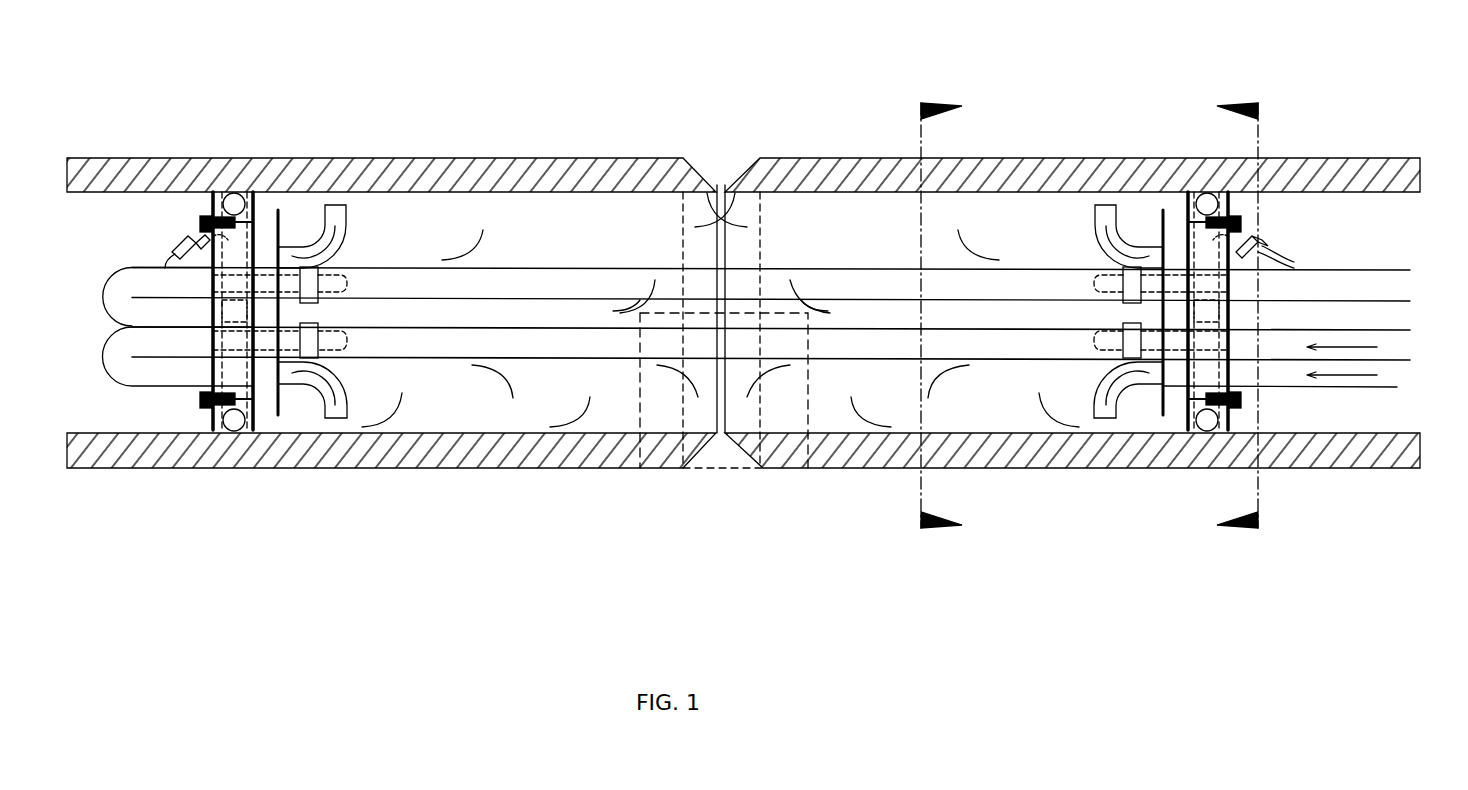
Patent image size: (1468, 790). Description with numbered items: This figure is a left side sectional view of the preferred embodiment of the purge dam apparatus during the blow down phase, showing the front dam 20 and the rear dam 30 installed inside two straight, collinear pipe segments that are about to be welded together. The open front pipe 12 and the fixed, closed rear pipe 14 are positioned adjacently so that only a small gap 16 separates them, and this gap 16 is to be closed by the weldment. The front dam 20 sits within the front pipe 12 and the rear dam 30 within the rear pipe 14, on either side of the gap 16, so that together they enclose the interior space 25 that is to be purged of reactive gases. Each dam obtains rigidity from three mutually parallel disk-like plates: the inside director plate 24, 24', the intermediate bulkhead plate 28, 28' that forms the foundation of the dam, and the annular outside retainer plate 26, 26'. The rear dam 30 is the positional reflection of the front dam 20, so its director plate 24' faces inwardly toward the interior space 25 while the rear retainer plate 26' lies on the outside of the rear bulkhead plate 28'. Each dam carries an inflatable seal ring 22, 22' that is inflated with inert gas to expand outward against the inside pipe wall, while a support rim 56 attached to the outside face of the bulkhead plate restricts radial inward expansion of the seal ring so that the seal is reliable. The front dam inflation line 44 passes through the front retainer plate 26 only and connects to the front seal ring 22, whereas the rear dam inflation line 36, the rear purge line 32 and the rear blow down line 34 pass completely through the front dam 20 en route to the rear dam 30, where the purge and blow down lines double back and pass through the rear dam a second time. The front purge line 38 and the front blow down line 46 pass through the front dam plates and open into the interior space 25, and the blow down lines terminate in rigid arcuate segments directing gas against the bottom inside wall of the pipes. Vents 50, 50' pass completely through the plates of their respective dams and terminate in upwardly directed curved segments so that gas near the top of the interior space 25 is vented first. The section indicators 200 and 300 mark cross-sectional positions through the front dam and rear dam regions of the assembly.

The front pipe 12 is at (815, 168).
The rear pipe 14 is at (522, 168).
The gap 16 is at (718, 188).
The front dam 20 is at (1252, 243).
The seal ring 22 is at (1277, 258).
The rear seal ring 22' is at (248, 236).
The director plate 24 is at (1150, 265).
The director plate 24' is at (317, 259).
The interior space 25 is at (603, 220).
The retainer plate 26 is at (1268, 174).
The rear retainer plate 26' is at (207, 244).
The bulkhead plate 28 is at (1152, 251).
The bulkhead plate 28' is at (279, 250).
The rear dam 30 is at (130, 413).
The rear purge line 32 is at (123, 283).
The rear blow down line 34 is at (148, 373).
The rear dam inflation line 36 is at (173, 253).
The front purge line 38 is at (1372, 317).
The front dam inflation line 44 is at (1292, 264).
The front blow down line 46 is at (1100, 418).
The vent 50 is at (1103, 236).
The vent 50' is at (342, 306).
The support rim 56 is at (1205, 432).
The section line 200 is at (966, 316).
The section line 300 is at (1211, 316).